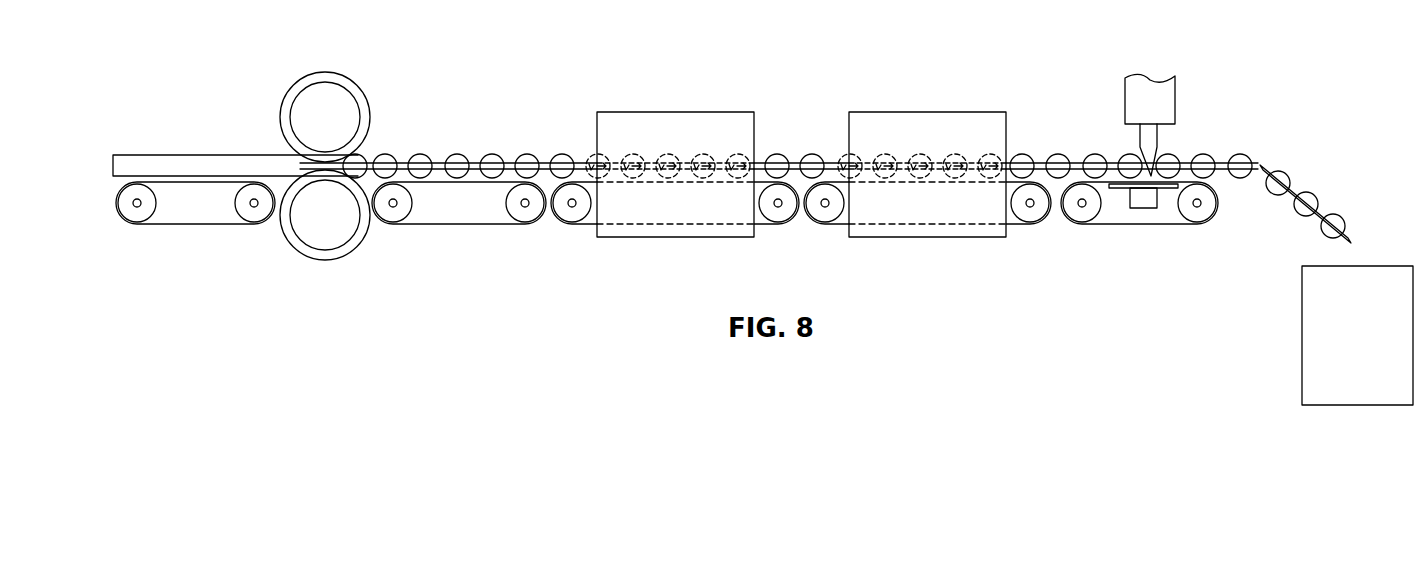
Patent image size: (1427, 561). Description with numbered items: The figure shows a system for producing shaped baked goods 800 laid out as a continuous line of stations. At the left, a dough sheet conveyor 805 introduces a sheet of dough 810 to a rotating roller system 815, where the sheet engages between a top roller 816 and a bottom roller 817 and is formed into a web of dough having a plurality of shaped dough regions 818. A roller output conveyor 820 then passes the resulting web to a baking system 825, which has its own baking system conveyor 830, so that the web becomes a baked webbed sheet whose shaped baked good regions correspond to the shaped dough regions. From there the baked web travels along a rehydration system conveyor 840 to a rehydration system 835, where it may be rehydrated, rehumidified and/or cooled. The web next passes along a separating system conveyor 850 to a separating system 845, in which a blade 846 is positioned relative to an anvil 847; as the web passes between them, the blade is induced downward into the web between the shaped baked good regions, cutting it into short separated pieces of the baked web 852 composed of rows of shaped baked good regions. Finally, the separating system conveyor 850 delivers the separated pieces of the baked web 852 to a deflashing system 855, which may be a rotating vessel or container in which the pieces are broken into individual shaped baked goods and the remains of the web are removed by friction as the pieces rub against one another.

The system for producing shaped baked goods 800 is at (470, 390).
The dough sheet conveyor 805 is at (187, 224).
The sheet of dough 810 is at (213, 155).
The rotating roller system 815 is at (371, 76).
The top roller 816 is at (367, 97).
The bottom roller 817 is at (333, 260).
The shaped dough regions 818 is at (493, 154).
The roller output conveyor 820 is at (437, 224).
The baking system 825 is at (617, 112).
The baking system conveyor 830 is at (762, 221).
The rehydration system 835 is at (867, 112).
The rehydration system conveyor 840 is at (1030, 224).
The separating system 845 is at (1197, 63).
The blade 846 is at (1160, 144).
The anvil 847 is at (1143, 209).
The separating system conveyor 850 is at (1195, 224).
The separated pieces of the baked web 852 is at (1265, 166).
The deflashing system 855 is at (1325, 406).